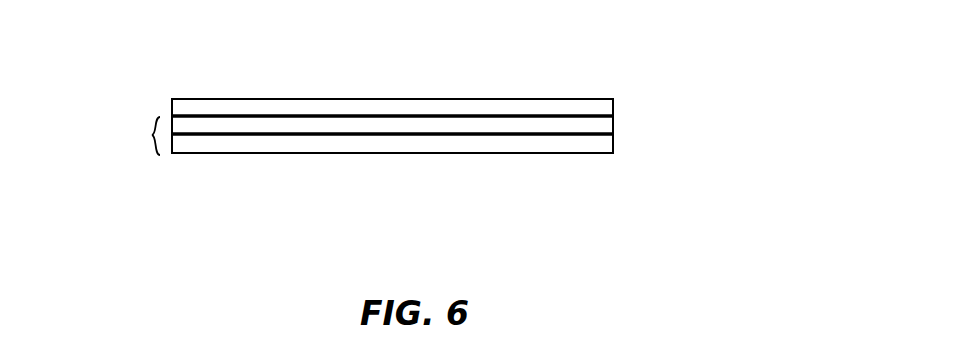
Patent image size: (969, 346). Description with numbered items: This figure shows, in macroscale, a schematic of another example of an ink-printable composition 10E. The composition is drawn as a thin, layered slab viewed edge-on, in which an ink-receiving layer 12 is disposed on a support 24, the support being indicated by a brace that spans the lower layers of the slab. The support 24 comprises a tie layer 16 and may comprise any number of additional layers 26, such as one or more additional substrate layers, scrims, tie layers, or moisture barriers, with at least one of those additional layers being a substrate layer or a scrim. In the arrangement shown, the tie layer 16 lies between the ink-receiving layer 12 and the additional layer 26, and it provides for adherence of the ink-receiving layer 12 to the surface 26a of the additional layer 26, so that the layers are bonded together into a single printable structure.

The ink-printable composition 10E is at (768, 118).
The ink-receiving layer 12 is at (556, 99).
The tie layer 16 is at (613, 123).
The support 24 is at (140, 133).
The additional layer 26 is at (613, 140).
The surface of additional layer 26a is at (512, 134).